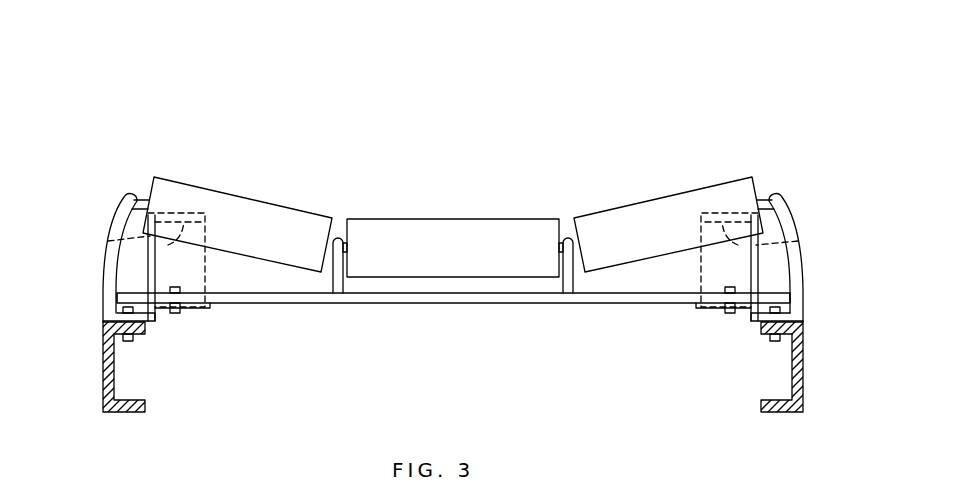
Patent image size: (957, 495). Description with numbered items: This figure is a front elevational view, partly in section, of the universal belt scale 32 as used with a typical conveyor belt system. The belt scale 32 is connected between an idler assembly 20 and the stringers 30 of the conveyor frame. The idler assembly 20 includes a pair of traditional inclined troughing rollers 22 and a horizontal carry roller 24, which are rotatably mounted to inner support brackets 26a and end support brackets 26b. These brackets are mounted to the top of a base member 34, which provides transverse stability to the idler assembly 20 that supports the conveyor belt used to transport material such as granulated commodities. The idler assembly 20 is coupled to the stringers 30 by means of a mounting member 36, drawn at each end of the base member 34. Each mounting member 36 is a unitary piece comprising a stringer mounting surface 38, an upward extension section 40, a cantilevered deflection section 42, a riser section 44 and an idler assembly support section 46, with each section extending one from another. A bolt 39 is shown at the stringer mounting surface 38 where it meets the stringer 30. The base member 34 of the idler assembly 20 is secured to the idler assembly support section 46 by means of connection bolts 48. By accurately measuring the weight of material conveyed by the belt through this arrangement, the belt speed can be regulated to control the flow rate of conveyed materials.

The idler assembly 20 is at (500, 172).
The universal belt scale 32 is at (245, 78).
The inclined troughing rollers 22 is at (262, 227).
The horizontal carry roller 24 is at (397, 235).
The inner support brackets 26a is at (337, 233).
The end support brackets 26b is at (132, 190).
The stringers 30 is at (133, 413).
The base member 34 is at (410, 298).
The mounting member 36 is at (215, 320).
The stringer mounting surface 38 is at (115, 314).
The bolt 39 is at (128, 342).
The upward extension section 40 is at (150, 268).
The cantilevered deflection section 42 is at (107, 238).
The riser section 44 is at (183, 270).
The idler assembly support section 46 is at (193, 310).
The connection bolts 48 is at (175, 316).